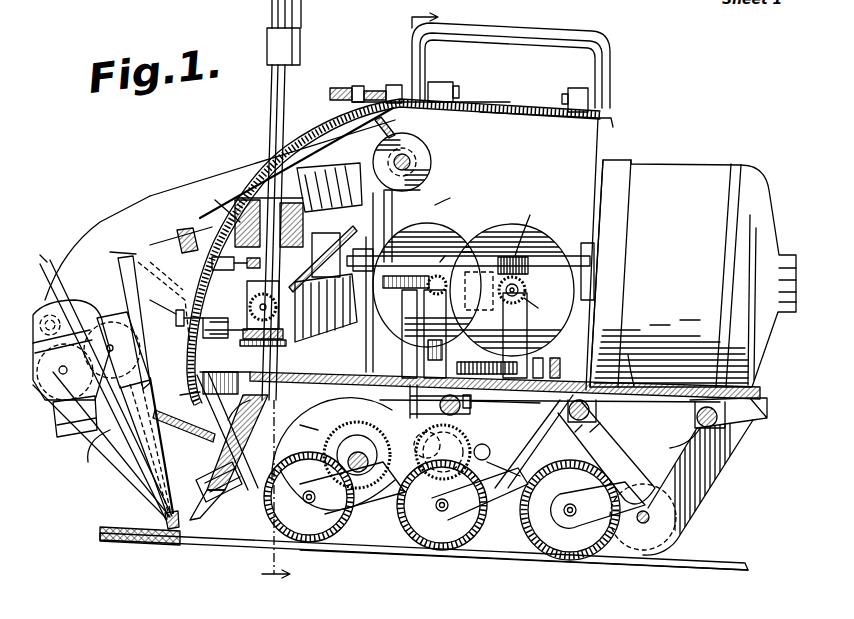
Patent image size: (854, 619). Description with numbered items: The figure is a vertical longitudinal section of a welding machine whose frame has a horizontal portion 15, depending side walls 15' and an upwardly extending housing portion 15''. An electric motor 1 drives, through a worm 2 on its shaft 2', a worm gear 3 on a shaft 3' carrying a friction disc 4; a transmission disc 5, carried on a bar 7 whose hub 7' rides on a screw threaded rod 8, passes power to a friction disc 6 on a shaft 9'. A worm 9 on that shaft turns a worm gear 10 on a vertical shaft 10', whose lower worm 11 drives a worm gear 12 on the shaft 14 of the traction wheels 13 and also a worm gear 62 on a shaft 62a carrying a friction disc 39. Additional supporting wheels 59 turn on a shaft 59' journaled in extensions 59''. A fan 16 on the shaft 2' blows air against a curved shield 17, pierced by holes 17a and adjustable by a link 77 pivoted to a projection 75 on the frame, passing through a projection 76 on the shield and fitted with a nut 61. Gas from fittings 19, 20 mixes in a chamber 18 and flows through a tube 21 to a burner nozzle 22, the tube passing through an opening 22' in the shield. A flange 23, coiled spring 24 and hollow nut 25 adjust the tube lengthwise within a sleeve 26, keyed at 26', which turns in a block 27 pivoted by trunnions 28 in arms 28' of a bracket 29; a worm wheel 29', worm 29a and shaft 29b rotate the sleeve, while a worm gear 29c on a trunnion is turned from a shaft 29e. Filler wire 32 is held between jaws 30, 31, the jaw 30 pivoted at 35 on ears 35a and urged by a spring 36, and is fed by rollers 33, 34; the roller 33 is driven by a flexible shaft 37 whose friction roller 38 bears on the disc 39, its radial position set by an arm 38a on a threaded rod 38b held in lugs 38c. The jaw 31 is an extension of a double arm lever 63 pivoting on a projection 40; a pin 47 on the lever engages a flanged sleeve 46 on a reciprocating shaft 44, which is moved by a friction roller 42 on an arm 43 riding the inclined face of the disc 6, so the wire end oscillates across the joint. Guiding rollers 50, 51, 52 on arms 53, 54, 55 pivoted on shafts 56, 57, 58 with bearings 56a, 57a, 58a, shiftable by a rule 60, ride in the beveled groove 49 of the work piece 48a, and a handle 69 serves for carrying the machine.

The electric motor 1 is at (680, 180).
The worm 2 is at (409, 298).
The motor shaft 2' is at (546, 251).
The worm gear 3 is at (525, 327).
The shaft 3' is at (539, 308).
The friction disc 4 is at (540, 212).
The transmission disc 5 is at (470, 255).
The friction disc 6 is at (432, 222).
The bar 7 is at (485, 323).
The hub portion 7' is at (547, 358).
The screw threaded rod 8 is at (505, 408).
The worm 9 is at (468, 313).
The shaft 9' is at (439, 256).
The worm gear 10 is at (405, 327).
The vertical shaft 10' is at (408, 314).
The worm 11 is at (368, 440).
The worm gear 12 is at (350, 445).
The supporting wheels 13 is at (370, 525).
The shaft 14 is at (347, 455).
The horizontal portion of the frame 15 is at (632, 360).
The depending side wall portions 15' is at (730, 433).
The upwardly extending portion of the frame 15'' is at (559, 251).
The fan 16 is at (326, 315).
The curved shield 17 is at (248, 172).
The holes 17a is at (232, 410).
The gas mixing chamber 18 is at (267, 45).
The tubular fitting 19 is at (272, 14).
The tubular fitting 20 is at (302, 16).
The tube 21 is at (272, 107).
The burner nozzle 22 is at (229, 482).
The opening 22' is at (219, 494).
The circular flange 23 is at (269, 215).
The coiled spring 24 is at (214, 205).
The hollow nut 25 is at (329, 187).
The sleeve 26 is at (480, 301).
The key connection 26' is at (228, 254).
The block 27 is at (296, 290).
The trunnions 28 is at (290, 307).
The arms 28' is at (214, 333).
The bracket 29 is at (263, 310).
The worm wheel 29' is at (326, 255).
The worm 29a is at (250, 272).
The manually rotatable shaft 29b is at (181, 230).
The worm gear 29c is at (250, 300).
The manually rotatable shaft 29e is at (185, 330).
The jaw 30 is at (150, 490).
The jaw 31 is at (135, 478).
The bar or wire 32 is at (43, 258).
The feed roller 33 is at (60, 382).
The feed roller 34 is at (112, 316).
The pivot 35 is at (85, 450).
The ears 35a is at (70, 480).
The spring 36 is at (45, 302).
The flexible shaft 37 is at (95, 410).
The friction roller 38 is at (443, 452).
The arm 38a is at (450, 440).
The screw threaded rod 38b is at (324, 414).
The lugs 38c is at (436, 350).
The friction disc 39 is at (532, 443).
The cylindrical projection 40 is at (125, 256).
The friction roller 42 is at (390, 248).
The arm 43 is at (411, 191).
The shaft 44 is at (410, 168).
The ring or sleeve 46 is at (430, 160).
The projection or pin 47 is at (420, 134).
The metal part 48a is at (160, 540).
The beveled edges 49 is at (505, 556).
The guiding roller 50 is at (308, 542).
The guiding roller 51 is at (441, 551).
The guiding roller 52 is at (568, 561).
The arm 53 is at (346, 488).
The arm 54 is at (618, 447).
The arm 55 is at (705, 488).
The shaft 56 is at (480, 399).
The bearing 56a is at (505, 411).
The shaft 57 is at (568, 431).
The bearing 57a is at (592, 433).
The shaft 58 is at (697, 417).
The bearing 58a is at (664, 441).
The supporting wheels 59 is at (665, 519).
The shaft 59' is at (655, 552).
The extensions 59'' is at (654, 464).
The rule 60 is at (598, 414).
The nut 61 is at (330, 92).
The worm gear 62 is at (497, 460).
The shaft 62a is at (540, 508).
The double arm lever 63 is at (125, 210).
The handle 69 is at (608, 44).
The projection 75 is at (393, 85).
The projection 76 is at (357, 86).
The link 77 is at (374, 91).